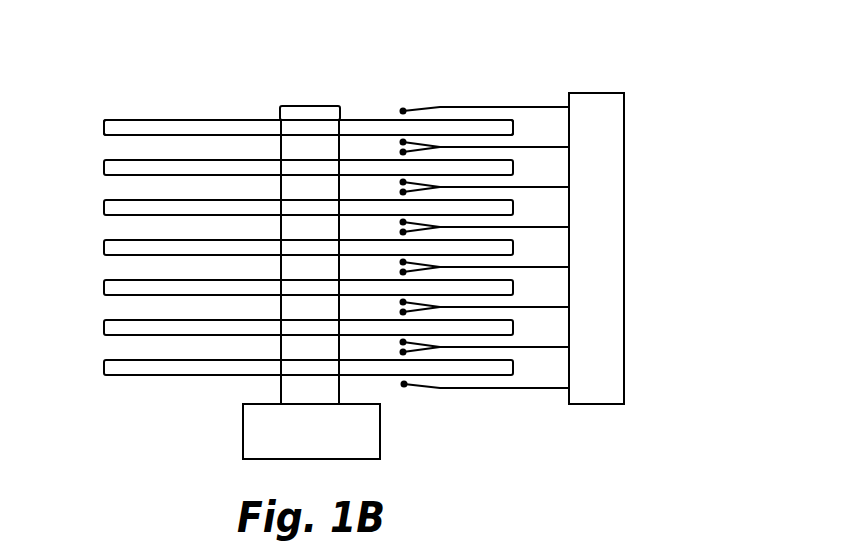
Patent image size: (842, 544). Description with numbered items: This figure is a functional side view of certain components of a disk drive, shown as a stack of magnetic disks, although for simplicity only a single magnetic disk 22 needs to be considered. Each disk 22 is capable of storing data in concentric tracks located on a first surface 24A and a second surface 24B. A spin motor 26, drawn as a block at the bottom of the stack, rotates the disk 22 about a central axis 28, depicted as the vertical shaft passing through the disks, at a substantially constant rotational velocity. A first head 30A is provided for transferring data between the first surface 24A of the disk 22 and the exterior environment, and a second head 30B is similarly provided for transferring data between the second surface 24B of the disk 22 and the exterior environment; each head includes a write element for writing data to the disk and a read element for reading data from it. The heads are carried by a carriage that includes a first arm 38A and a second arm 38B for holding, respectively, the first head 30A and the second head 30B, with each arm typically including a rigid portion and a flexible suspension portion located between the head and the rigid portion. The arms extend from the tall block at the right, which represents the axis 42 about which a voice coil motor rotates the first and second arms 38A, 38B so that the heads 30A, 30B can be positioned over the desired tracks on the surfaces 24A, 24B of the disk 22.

The magnetic disk 22 is at (193, 98).
The first surface 24A is at (158, 120).
The second surface 24B is at (118, 136).
The spin motor 26 is at (207, 424).
The central axis 28 is at (313, 106).
The first head 30A is at (405, 109).
The second head 30B is at (400, 143).
The first arm 38A is at (538, 107).
The second arm 38B is at (546, 148).
The axis 42 is at (597, 93).